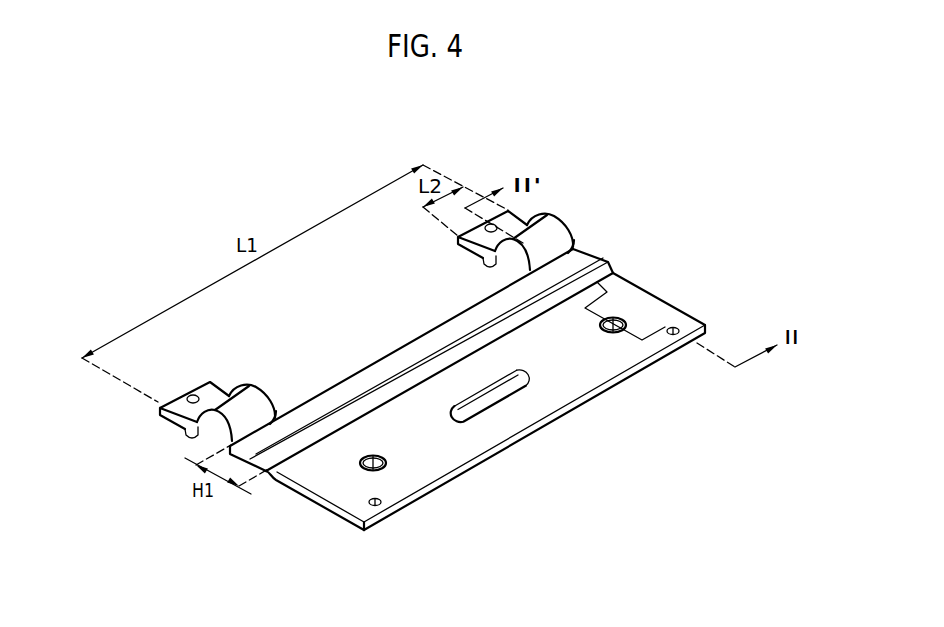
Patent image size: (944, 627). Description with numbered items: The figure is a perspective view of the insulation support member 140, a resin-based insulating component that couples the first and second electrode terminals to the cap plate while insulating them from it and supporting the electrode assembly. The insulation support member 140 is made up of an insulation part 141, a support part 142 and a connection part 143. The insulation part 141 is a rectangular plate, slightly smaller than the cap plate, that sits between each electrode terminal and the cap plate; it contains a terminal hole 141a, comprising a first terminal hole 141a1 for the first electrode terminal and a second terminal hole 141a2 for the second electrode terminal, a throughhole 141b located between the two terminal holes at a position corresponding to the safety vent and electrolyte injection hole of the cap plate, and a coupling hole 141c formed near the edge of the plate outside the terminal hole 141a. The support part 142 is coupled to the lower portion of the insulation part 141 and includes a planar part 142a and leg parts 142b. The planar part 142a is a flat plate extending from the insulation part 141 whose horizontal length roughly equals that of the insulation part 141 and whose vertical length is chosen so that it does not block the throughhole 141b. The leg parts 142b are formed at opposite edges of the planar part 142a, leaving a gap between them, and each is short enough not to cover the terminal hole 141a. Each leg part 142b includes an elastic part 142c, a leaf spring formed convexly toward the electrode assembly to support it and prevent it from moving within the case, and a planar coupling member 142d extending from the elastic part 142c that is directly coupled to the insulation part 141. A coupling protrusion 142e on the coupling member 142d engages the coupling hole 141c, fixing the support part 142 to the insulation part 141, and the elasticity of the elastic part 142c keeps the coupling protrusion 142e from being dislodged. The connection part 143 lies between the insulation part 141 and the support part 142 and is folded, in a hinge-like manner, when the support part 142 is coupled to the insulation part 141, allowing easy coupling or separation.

The insulation support member 140 is at (112, 152).
The insulation part 141 is at (660, 307).
The terminal hole 141a is at (499, 427).
The first terminal hole 141a1 is at (370, 457).
The second terminal hole 141a2 is at (597, 327).
The throughhole 141b is at (468, 400).
The coupling hole 141c is at (378, 496).
The support part 142 is at (432, 284).
The planar part 142a is at (567, 252).
The leg parts 142b is at (547, 211).
The elastic part 142c is at (566, 232).
The coupling member 142d is at (522, 217).
The coupling protrusion 142e is at (486, 268).
The connection part 143 is at (613, 268).